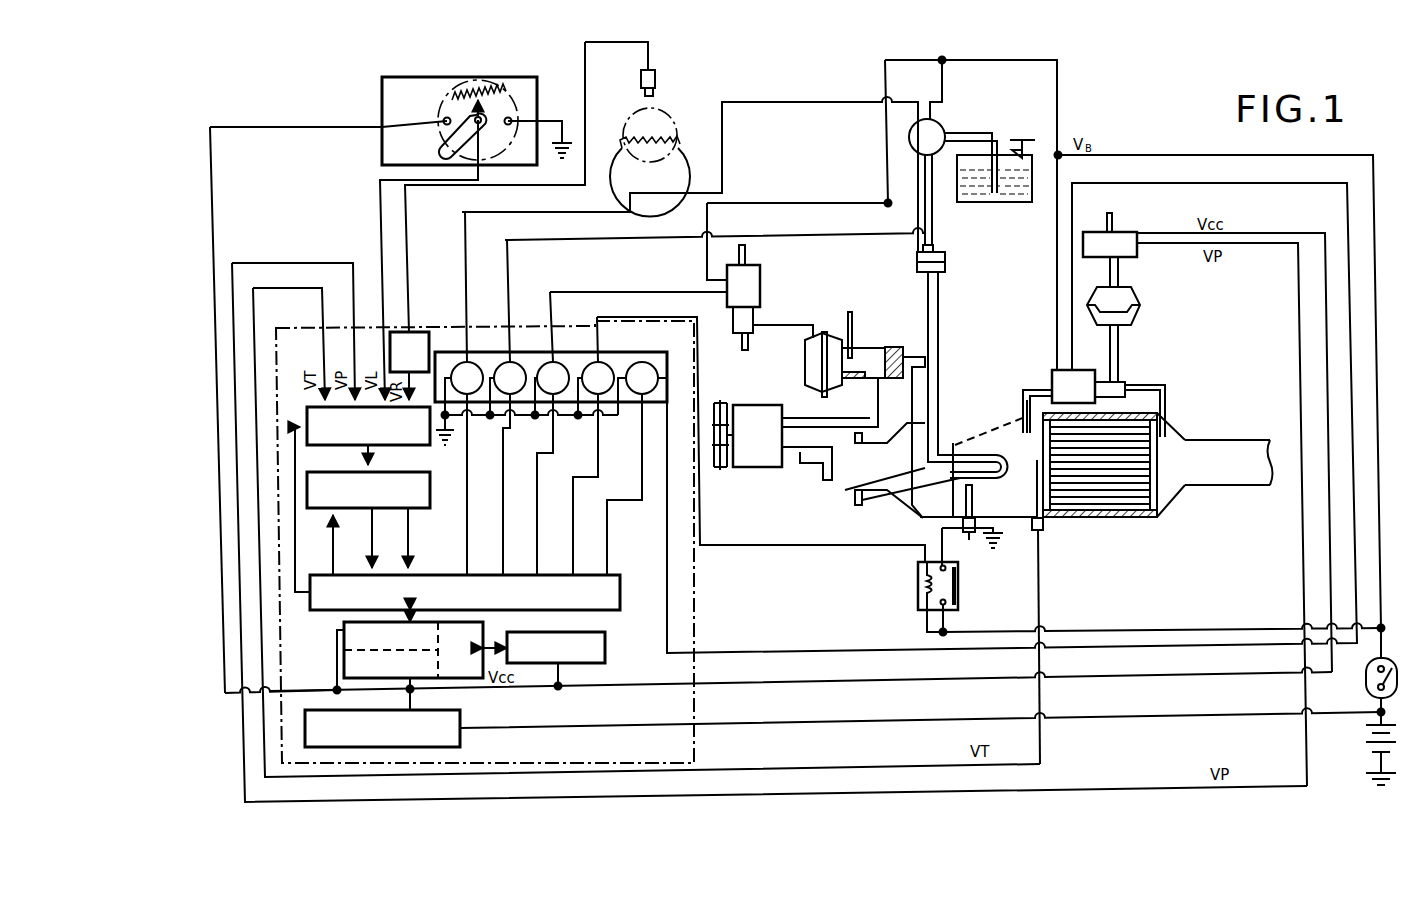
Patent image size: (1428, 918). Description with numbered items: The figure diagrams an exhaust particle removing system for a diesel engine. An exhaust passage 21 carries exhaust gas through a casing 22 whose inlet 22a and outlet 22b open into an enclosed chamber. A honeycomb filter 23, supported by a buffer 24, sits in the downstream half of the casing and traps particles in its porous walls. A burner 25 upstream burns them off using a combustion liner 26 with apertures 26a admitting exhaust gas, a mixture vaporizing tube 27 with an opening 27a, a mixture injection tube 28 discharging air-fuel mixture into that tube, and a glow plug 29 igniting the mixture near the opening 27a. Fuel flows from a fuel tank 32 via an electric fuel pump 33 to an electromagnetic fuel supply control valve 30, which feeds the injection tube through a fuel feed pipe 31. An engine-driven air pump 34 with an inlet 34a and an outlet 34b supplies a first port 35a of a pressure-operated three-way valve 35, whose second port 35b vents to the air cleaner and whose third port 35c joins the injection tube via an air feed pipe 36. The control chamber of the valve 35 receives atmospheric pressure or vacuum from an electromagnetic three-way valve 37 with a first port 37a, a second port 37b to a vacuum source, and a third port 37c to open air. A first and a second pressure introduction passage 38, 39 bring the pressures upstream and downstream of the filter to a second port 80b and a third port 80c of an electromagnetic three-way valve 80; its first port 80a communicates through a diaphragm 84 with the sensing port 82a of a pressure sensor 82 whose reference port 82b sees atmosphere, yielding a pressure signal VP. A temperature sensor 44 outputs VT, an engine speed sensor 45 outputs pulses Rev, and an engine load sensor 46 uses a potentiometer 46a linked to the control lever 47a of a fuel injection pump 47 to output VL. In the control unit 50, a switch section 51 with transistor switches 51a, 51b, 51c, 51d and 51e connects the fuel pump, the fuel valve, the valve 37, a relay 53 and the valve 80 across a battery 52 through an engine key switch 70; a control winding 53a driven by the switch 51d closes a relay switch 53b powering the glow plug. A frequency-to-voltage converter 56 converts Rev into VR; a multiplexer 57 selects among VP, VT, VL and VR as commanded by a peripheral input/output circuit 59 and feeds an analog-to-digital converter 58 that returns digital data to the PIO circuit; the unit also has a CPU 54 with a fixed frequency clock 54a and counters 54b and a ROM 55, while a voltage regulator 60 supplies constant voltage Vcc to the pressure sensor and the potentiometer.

The exhaust passage 21 is at (1245, 447).
The casing 22 is at (950, 412).
The inlet 22a is at (855, 437).
The outlet 22b is at (1190, 478).
The filter 23 is at (1140, 480).
The buffer 24 is at (1118, 518).
The burner 25 is at (968, 455).
The combustion liner 26 is at (963, 440).
The apertures 26a is at (990, 520).
The mixture vaporizing tube 27 is at (960, 510).
The opening 27a is at (880, 500).
The mixture injection tube 28 is at (856, 494).
The glow plug 29 is at (958, 535).
The fuel supply control valve 30 is at (938, 247).
The fuel feed pipe 31 is at (938, 298).
The fuel tank 32 is at (1025, 140).
The fuel pump 33 is at (945, 128).
The air pump 34 is at (748, 467).
The inlet 34a is at (802, 465).
The outlet 34b is at (790, 418).
The pressure-operated three-way valve 35 is at (826, 333).
The first port 35a is at (868, 380).
The second port 35b is at (855, 322).
The third port 35c is at (905, 365).
The air feed pipe 36 is at (912, 378).
The electromagnetic three-way valve 37 is at (760, 272).
The first port 37a is at (760, 322).
The second port 37b is at (742, 345).
The third port 37c is at (745, 252).
The first pressure introduction passage 38 is at (1027, 398).
The second pressure introduction passage 39 is at (1168, 425).
The temperature sensor 44 is at (1043, 528).
The engine speed sensor 45 is at (656, 75).
The engine load sensor 46 is at (478, 90).
The potentiometer 46a is at (510, 104).
The fuel injection pump 47 is at (372, 100).
The control lever 47a is at (442, 150).
The control unit 50 is at (696, 621).
The switch section 51 is at (617, 360).
The switch 51a is at (472, 362).
The switch 51b is at (514, 362).
The switch 51c is at (558, 362).
The switch 51d is at (592, 395).
The switch 51e is at (638, 395).
The battery 52 is at (1390, 732).
The relay 53 is at (918, 605).
The control winding 53a is at (924, 580).
The relay switch 53b is at (955, 594).
The central processing unit 54 is at (488, 626).
The fixed frequency clock 54a is at (344, 637).
The counters 54b is at (344, 669).
The read-only memory 55 is at (600, 636).
The frequency-to-voltage converter 56 is at (413, 331).
The multiplexer 57 is at (402, 445).
The analog-to-digital converter 58 is at (430, 492).
The peripheral input/output circuit 59 is at (615, 576).
The voltage regulator 60 is at (460, 716).
The engine key switch 70 is at (1396, 668).
The electromagnetic three-way valve 80 is at (1080, 372).
The first port 80a is at (1120, 352).
The second port 80b is at (1058, 370).
The third port 80c is at (1160, 385).
The pressure sensor 82 is at (1128, 232).
The sensing port 82a is at (1120, 274).
The reference port 82b is at (1107, 220).
The diaphragm 84 is at (1138, 316).